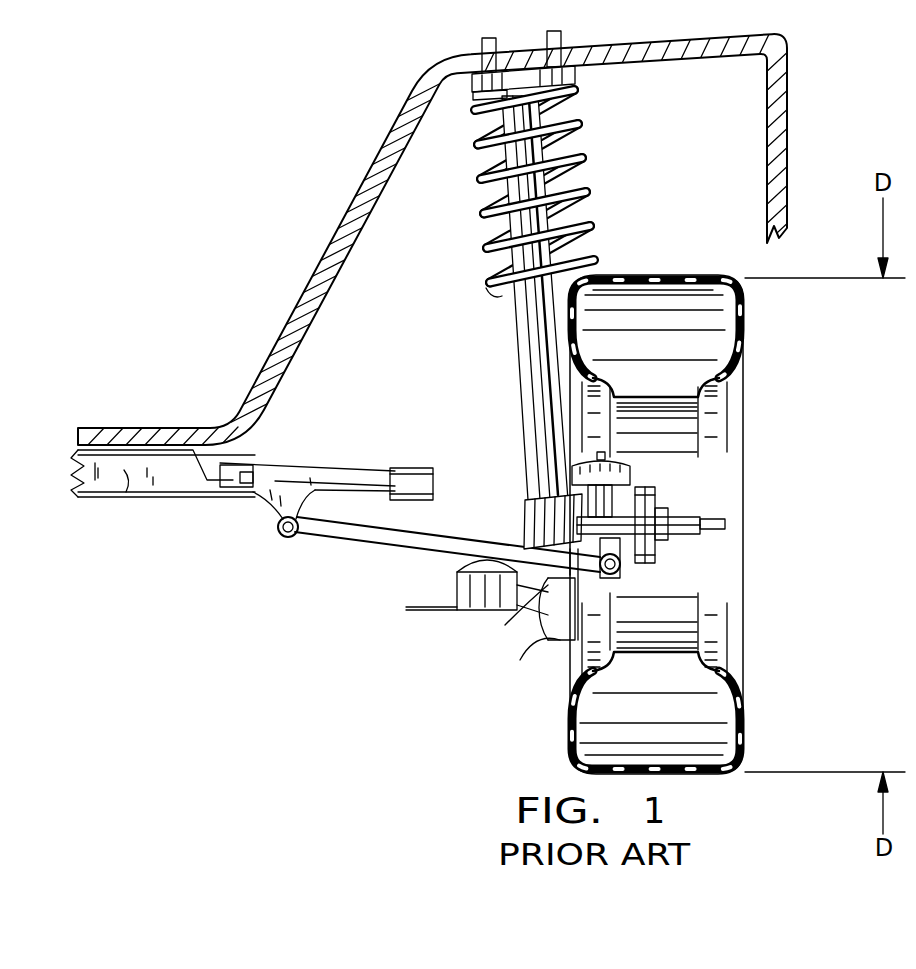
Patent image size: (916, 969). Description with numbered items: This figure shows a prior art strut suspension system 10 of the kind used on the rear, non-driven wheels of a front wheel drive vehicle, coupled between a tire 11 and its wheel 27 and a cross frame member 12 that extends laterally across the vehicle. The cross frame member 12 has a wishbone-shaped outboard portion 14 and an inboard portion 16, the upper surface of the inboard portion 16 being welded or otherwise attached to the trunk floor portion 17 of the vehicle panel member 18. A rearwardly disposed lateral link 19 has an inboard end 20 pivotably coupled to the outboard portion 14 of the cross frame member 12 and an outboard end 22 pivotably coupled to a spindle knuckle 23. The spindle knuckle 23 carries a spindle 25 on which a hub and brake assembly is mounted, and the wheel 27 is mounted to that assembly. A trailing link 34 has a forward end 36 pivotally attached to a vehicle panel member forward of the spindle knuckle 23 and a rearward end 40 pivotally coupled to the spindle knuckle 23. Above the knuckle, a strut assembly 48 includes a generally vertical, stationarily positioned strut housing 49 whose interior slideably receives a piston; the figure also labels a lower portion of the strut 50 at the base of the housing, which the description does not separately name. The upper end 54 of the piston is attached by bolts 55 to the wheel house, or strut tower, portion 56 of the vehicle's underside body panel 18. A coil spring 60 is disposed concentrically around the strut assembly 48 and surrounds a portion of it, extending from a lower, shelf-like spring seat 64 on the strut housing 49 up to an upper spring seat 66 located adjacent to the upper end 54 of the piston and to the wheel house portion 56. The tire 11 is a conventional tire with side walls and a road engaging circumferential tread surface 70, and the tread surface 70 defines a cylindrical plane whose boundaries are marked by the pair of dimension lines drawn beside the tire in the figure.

The suspension system 10 is at (362, 285).
The tire 11 is at (741, 532).
The cross frame member 12 is at (172, 515).
The outboard portion 14 is at (298, 466).
The inboard portion 16 is at (126, 492).
The trunk floor portion 17 is at (119, 430).
The vehicle panel member 18 is at (162, 395).
The rearwardly disposed lateral link 19 is at (356, 566).
The inboard end 20 is at (280, 534).
The outboard end 22 is at (535, 607).
The spindle knuckle 23 is at (620, 578).
The spindle 25 is at (683, 517).
The wheel 27 is at (712, 423).
The trailing link 34 is at (432, 700).
The forward end 36 is at (457, 592).
The rearward end 40 is at (558, 627).
The strut assembly 48 is at (462, 365).
The strut housing 49 is at (527, 400).
The strut cylinder body 50 is at (530, 495).
The upper end 54 is at (577, 73).
The bolts 55 is at (553, 31).
The wheel house portion 56 is at (630, 42).
The coil spring 60 is at (589, 295).
The lower spring seat 64 is at (477, 297).
The upper spring seat 66 is at (452, 80).
The tread surface 70 is at (645, 277).